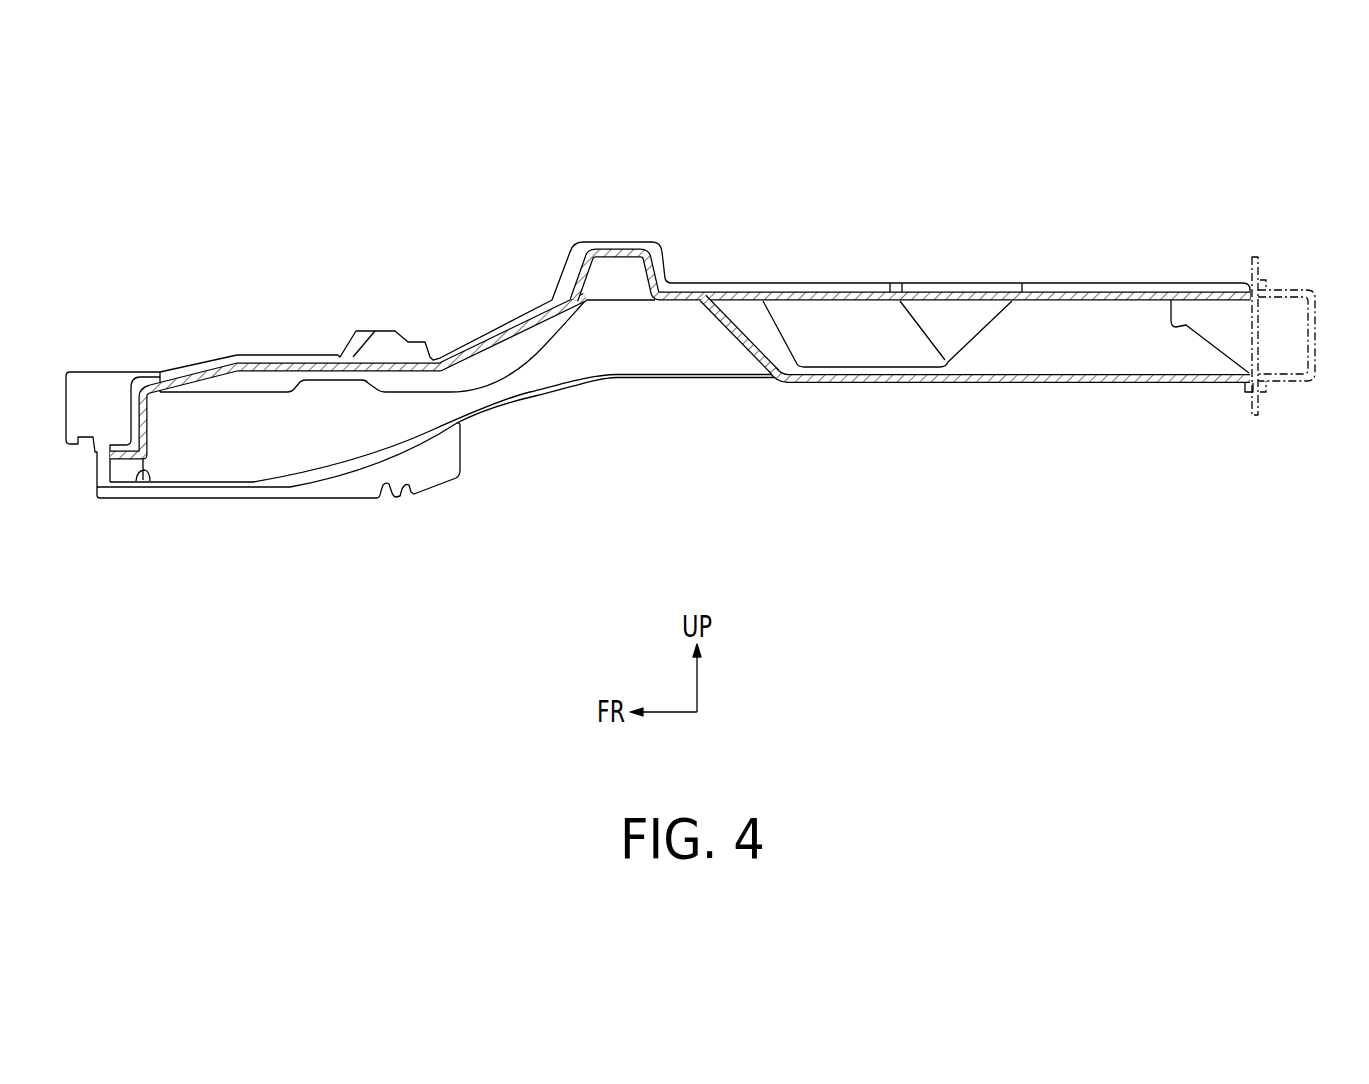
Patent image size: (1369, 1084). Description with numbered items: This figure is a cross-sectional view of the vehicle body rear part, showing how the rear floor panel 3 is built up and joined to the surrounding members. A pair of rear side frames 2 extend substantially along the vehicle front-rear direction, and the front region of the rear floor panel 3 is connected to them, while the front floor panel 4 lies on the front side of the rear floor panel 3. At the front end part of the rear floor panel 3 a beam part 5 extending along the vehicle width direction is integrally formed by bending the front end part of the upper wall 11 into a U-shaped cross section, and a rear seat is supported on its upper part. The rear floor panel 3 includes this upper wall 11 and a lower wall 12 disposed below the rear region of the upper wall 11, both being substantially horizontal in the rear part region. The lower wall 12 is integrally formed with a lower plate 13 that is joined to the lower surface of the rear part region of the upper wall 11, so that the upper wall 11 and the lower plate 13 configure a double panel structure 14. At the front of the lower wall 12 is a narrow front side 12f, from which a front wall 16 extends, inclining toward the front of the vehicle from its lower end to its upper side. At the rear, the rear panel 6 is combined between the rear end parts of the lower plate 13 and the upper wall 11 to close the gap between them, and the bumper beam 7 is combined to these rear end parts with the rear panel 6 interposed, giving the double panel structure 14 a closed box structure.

The rear side frame 2 is at (653, 376).
The rear floor panel 3 is at (1150, 283).
The front floor panel 4 is at (303, 363).
The beam part 5 is at (617, 252).
The rear panel 6 is at (1257, 403).
The bumper beam 7 is at (1312, 325).
The upper wall 11 is at (925, 292).
The lower wall 12 is at (997, 384).
The front side 12f is at (772, 384).
The lower plate 13 is at (967, 416).
The double panel structure 14 is at (1087, 382).
The front wall 16 is at (729, 338).